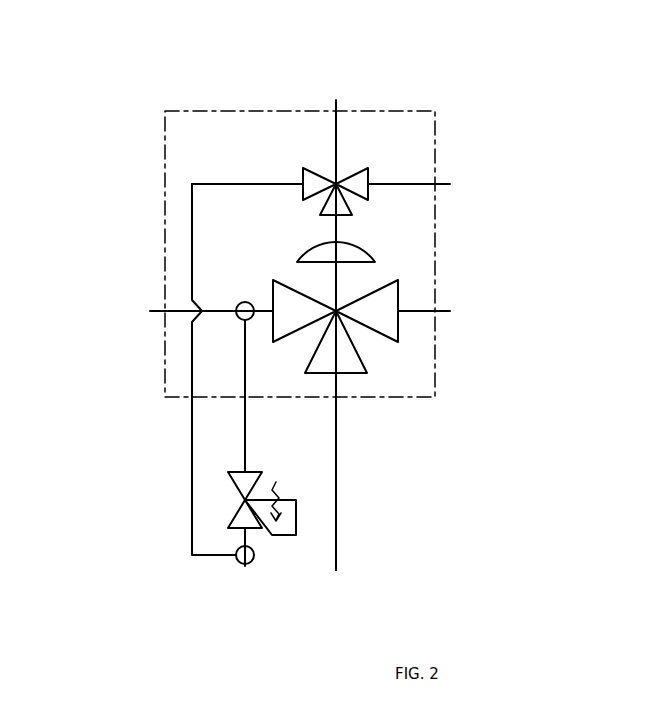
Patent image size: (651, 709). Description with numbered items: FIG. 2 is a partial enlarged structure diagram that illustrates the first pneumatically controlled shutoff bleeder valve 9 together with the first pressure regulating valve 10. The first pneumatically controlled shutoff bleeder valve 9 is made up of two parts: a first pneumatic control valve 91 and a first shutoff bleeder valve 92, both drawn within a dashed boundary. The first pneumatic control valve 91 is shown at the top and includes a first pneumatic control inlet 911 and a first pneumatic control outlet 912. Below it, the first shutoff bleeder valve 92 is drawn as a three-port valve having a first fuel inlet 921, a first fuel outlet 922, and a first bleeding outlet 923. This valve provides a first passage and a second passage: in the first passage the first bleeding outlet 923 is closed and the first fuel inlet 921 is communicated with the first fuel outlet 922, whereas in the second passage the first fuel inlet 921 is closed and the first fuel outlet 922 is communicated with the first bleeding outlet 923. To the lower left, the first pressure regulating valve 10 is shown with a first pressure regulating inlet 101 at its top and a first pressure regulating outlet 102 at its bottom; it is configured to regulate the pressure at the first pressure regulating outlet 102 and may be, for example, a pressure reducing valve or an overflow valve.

The first pneumatically controlled shutoff bleeder valve 9 is at (180, 110).
The first pneumatic control valve 91 is at (300, 48).
The first pneumatic control inlet 911 is at (295, 182).
The first pneumatic control outlet 912 is at (381, 182).
The first shutoff bleeder valve 92 is at (537, 373).
The first fuel inlet 921 is at (282, 329).
The first fuel outlet 922 is at (412, 315).
The first bleeding outlet 923 is at (342, 385).
The first pressure regulating valve 10 is at (84, 428).
The first pressure regulating inlet 101 is at (245, 470).
The first pressure regulating outlet 102 is at (250, 531).